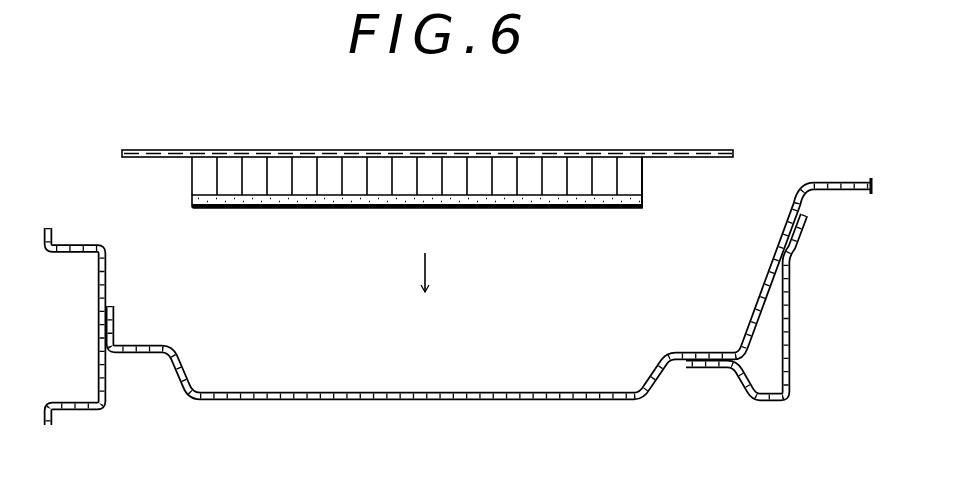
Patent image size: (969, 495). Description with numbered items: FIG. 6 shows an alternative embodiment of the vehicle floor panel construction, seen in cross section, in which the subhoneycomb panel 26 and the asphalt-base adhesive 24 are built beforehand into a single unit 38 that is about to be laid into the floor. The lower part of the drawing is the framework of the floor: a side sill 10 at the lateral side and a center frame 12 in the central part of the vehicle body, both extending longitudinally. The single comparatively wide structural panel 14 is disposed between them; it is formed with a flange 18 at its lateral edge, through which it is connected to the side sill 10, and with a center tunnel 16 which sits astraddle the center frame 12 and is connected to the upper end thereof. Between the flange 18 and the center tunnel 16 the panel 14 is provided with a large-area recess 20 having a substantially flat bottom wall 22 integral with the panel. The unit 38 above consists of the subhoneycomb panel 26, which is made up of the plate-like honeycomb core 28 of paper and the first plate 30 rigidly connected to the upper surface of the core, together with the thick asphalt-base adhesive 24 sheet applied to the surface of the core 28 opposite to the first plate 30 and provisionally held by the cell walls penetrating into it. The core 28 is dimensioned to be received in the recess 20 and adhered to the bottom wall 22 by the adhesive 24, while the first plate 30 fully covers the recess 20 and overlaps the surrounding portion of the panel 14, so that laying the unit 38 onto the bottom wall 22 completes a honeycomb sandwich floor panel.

The side sill 10 is at (88, 243).
The center frame 12 is at (773, 403).
The structural panel 14 is at (757, 292).
The center tunnel 16 is at (848, 178).
The flange 18 is at (114, 320).
The recess 20 is at (281, 370).
The bottom wall 22 is at (441, 405).
The asphalt-base adhesive 24 is at (512, 212).
The subhoneycomb panel 26 is at (469, 149).
The honeycomb core 28 is at (632, 179).
The first plate 30 is at (175, 149).
The single unit 38 is at (581, 141).